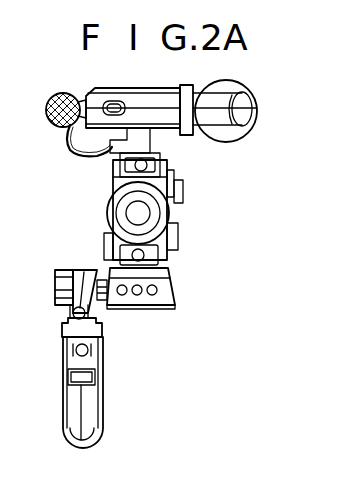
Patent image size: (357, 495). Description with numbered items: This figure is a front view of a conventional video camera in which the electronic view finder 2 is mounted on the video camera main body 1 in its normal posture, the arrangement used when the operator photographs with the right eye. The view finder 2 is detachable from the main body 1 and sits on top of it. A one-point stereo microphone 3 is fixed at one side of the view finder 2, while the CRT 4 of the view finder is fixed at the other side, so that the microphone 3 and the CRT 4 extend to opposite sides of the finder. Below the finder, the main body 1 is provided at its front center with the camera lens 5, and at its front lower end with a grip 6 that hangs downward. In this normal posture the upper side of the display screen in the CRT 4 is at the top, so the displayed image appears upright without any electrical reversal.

The video camera main body 1 is at (157, 248).
The electronic view finder 2 is at (167, 117).
The one-point stereo microphone 3 is at (56, 130).
The CRT 4 is at (231, 110).
The camera lens 5 is at (108, 213).
The grip 6 is at (96, 377).